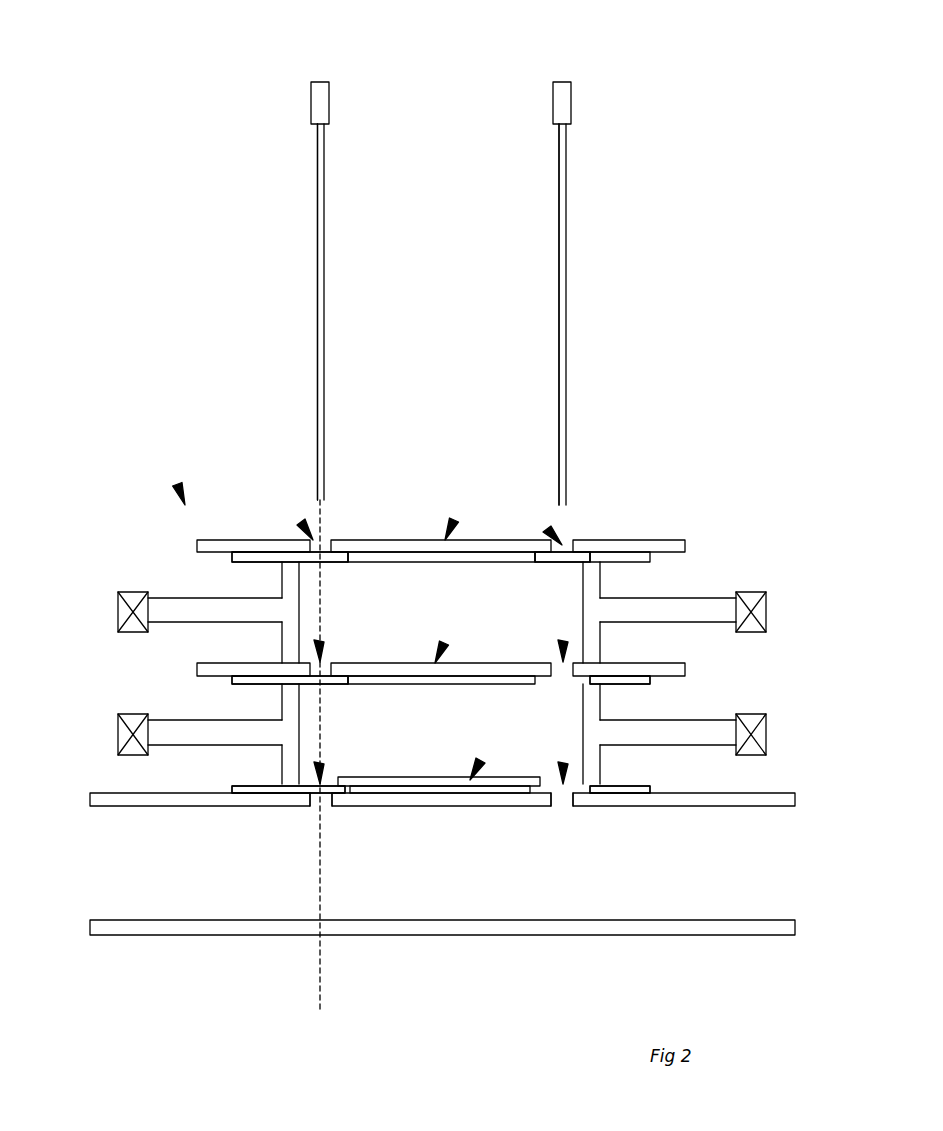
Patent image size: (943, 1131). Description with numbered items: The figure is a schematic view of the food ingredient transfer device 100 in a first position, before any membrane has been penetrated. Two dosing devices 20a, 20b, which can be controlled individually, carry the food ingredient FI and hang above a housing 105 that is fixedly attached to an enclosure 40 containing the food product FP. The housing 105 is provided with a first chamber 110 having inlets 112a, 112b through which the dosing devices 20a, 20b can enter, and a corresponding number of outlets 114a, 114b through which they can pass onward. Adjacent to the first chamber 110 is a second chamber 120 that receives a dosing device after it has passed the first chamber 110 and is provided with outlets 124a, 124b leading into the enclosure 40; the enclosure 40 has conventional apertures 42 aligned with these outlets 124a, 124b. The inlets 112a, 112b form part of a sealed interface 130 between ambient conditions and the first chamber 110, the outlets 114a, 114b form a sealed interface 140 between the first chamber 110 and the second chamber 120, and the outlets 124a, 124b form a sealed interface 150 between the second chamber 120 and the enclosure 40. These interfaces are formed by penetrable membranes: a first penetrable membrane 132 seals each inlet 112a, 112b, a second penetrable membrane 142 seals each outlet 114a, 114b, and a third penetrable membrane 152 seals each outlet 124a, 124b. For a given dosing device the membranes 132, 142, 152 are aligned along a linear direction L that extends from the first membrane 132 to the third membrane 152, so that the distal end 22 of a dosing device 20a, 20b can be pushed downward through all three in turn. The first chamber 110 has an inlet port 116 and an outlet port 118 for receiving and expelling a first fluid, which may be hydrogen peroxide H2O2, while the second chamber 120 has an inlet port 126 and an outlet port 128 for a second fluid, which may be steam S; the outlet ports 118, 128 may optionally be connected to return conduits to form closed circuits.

The food ingredient transfer device 100 is at (178, 486).
The housing 105 is at (608, 545).
The first chamber 110 is at (441, 656).
The inlet 112a is at (304, 525).
The inlet 112b is at (548, 531).
The outlet 114a is at (318, 650).
The outlet 114b is at (566, 650).
The inlet port 116 is at (598, 610).
The outlet port 118 is at (285, 610).
The second chamber 120 is at (442, 773).
The outlet 124a is at (318, 770).
The outlet 124b is at (566, 770).
The inlet port 126 is at (595, 738).
The outlet port 128 is at (285, 742).
The sealed interface 130 is at (454, 521).
The first penetrable membrane 132 is at (338, 562).
The sealed interface 140 is at (444, 644).
The second penetrable membrane 142 is at (340, 684).
The sealed interface 150 is at (481, 761).
The third penetrable membrane 152 is at (318, 806).
The dosing device 20a is at (322, 236).
The dosing device 20b is at (566, 268).
The distal end 22 is at (322, 500).
The enclosure 40 is at (462, 880).
The aperture 42 is at (328, 806).
The food ingredient FI is at (311, 82).
The hydrogen peroxide H2O2 is at (688, 612).
The steam S is at (690, 737).
The food product FP is at (162, 872).
The linear direction L is at (320, 955).